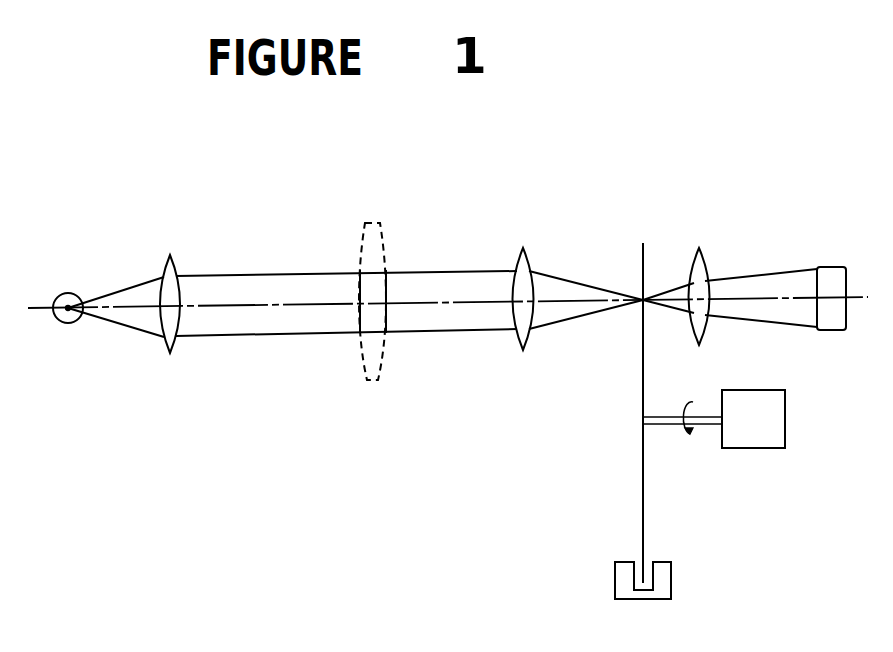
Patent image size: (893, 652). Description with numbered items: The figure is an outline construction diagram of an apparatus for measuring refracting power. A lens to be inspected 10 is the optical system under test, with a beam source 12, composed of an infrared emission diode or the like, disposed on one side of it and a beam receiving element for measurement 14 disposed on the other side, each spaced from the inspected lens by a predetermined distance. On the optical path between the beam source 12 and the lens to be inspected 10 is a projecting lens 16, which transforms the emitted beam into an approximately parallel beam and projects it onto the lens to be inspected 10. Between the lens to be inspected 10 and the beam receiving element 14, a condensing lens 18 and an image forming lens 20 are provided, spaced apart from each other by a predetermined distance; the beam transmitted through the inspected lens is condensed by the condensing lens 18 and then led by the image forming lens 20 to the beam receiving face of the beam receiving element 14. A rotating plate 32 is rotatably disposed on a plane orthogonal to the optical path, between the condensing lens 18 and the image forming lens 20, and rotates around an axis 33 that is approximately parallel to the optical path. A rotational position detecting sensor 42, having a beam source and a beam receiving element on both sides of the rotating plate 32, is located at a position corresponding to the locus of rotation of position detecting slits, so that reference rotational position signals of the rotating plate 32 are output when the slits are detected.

The lens to be inspected 10 is at (387, 239).
The beam source 12 is at (68, 323).
The beam receiving element for measurement 14 is at (834, 262).
The projecting lens 16 is at (158, 273).
The condensing lens 18 is at (533, 251).
The image forming lens 20 is at (711, 257).
The rotating plate 32 is at (641, 487).
The axis 33 is at (662, 421).
The rotational position detecting sensor 42 is at (672, 590).